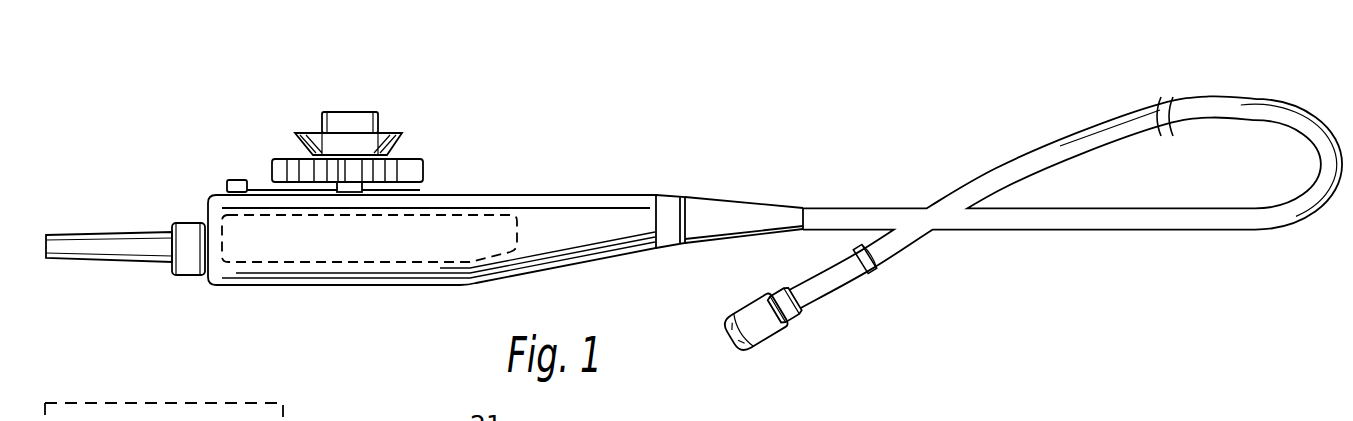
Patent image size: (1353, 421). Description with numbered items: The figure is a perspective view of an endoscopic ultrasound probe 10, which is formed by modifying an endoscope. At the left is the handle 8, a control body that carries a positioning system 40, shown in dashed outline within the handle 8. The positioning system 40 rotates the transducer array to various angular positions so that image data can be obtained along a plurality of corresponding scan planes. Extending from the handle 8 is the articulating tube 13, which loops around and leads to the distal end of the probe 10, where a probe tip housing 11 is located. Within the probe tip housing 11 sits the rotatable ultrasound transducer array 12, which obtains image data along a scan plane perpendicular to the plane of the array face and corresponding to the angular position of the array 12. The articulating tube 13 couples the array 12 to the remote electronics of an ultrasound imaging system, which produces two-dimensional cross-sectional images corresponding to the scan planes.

The probe 10 is at (691, 244).
The handle 8 is at (257, 294).
The positioning system 40 is at (455, 215).
The articulating tube 13 is at (992, 160).
The probe tip housing 11 is at (764, 352).
The rotatable ultrasound transducer array 12 is at (734, 366).